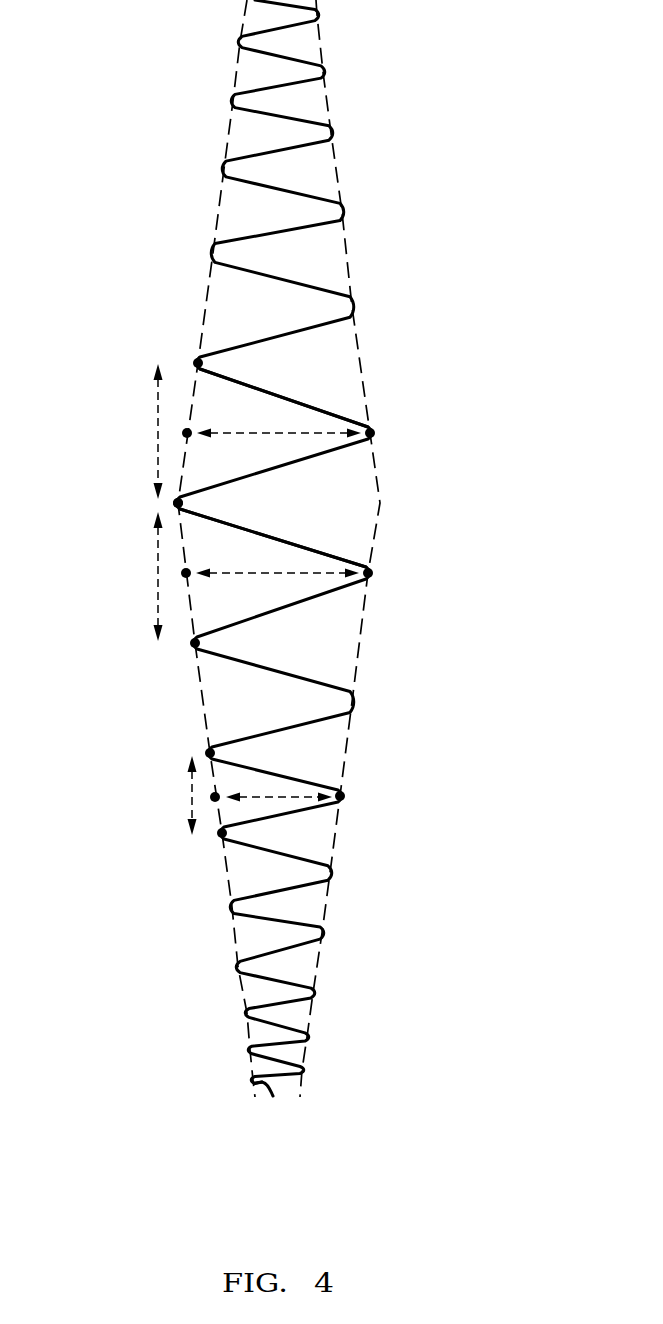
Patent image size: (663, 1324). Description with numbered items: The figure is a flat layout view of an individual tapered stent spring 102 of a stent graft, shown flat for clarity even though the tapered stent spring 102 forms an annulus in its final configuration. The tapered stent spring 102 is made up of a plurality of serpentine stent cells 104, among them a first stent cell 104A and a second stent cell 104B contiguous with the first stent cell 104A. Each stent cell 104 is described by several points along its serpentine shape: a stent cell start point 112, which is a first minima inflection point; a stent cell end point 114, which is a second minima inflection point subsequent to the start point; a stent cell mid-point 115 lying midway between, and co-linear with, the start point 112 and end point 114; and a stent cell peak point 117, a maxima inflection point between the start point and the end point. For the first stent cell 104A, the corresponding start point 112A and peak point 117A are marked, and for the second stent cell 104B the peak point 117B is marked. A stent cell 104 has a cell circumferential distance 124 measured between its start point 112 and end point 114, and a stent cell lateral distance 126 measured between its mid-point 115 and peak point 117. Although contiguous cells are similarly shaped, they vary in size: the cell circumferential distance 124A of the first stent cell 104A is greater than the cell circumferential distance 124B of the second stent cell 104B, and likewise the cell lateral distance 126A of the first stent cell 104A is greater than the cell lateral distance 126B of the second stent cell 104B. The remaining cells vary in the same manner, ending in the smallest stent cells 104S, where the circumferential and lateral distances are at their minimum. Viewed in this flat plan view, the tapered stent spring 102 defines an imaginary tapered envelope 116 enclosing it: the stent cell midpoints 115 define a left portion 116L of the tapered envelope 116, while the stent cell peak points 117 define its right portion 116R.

The tapered stent spring 102 is at (411, 168).
The stent cells 104 is at (293, 52).
The first stent cell 104A is at (323, 563).
The second stent cell 104B is at (303, 415).
The smallest stent cells 104S is at (272, 1095).
The stent cell start point 112 is at (198, 363).
The stent cell start point 112A is at (179, 507).
The stent cell end point 114 is at (178, 506).
The stent cell mid-point 115 is at (187, 433).
The tapered envelope 116 is at (213, 68).
The left portion of tapered envelope 116L is at (228, 135).
The right portion of tapered envelope 116R is at (330, 96).
The stent cell peak point 117 is at (342, 796).
The stent cell peak point 117A is at (372, 433).
The stent cell peak point 117B is at (369, 573).
The cell circumferential distance 124 is at (192, 810).
The cell circumferential distance 124A is at (157, 585).
The cell circumferential distance 124B is at (157, 400).
The stent cell lateral distance 126 is at (282, 802).
The cell lateral distance 126A is at (232, 580).
The cell lateral distance 126B is at (233, 437).